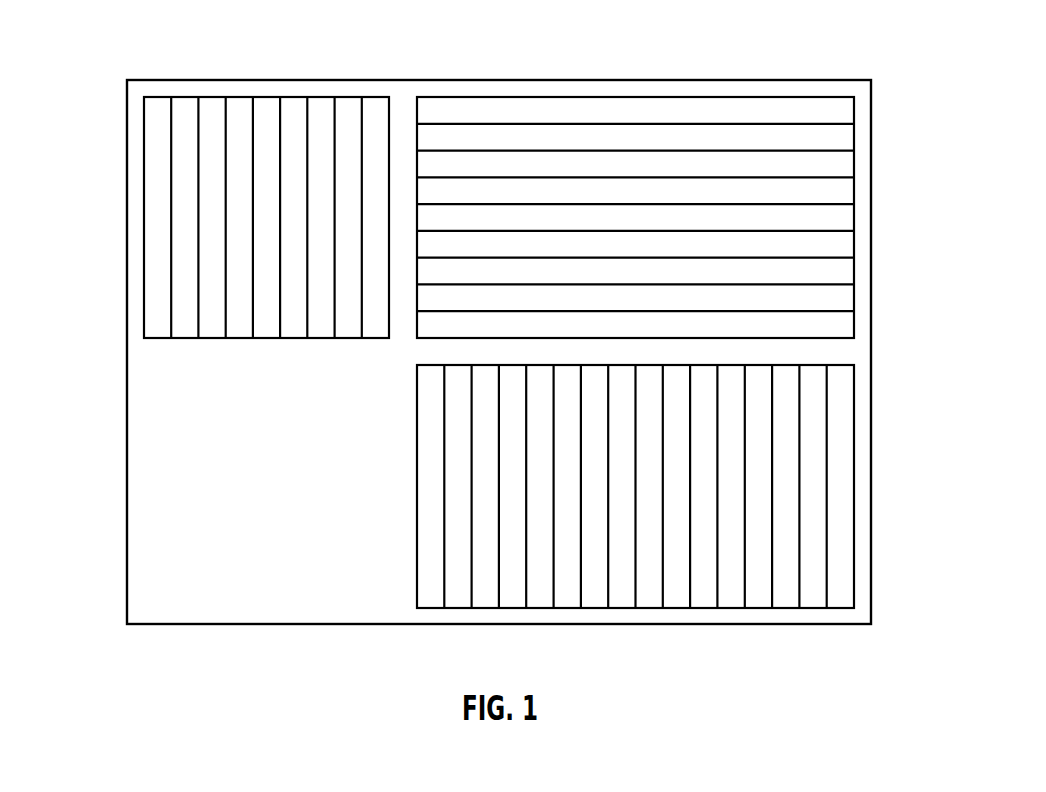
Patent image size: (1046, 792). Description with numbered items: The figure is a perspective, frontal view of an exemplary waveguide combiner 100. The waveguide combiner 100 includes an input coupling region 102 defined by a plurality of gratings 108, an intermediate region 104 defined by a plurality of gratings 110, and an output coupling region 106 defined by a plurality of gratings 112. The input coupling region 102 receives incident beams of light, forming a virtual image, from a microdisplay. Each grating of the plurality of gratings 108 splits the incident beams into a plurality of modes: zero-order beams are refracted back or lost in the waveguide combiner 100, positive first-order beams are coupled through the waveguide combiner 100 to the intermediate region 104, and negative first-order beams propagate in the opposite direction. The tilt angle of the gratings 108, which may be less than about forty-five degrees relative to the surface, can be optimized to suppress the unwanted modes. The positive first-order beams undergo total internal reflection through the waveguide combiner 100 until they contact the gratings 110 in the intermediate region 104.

The waveguide combiner 100 is at (212, 447).
The input coupling region 102 is at (266, 178).
The intermediate region 104 is at (635, 178).
The output coupling region 106 is at (688, 496).
The gratings 108 is at (320, 113).
The gratings 110 is at (779, 112).
The gratings 112 is at (842, 574).